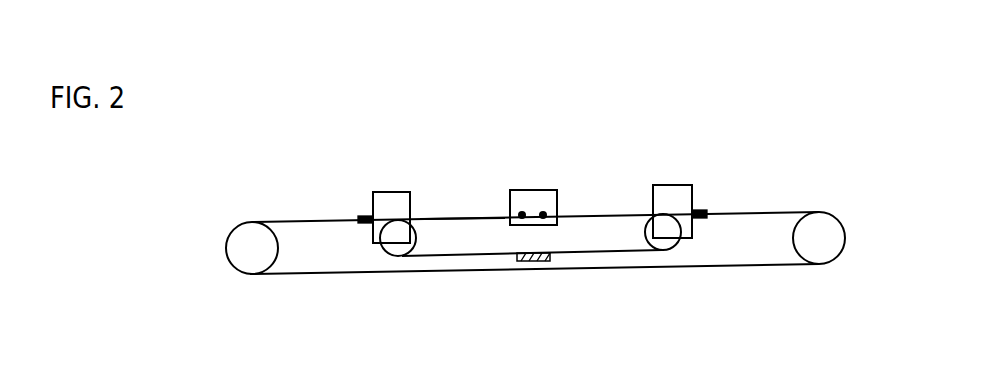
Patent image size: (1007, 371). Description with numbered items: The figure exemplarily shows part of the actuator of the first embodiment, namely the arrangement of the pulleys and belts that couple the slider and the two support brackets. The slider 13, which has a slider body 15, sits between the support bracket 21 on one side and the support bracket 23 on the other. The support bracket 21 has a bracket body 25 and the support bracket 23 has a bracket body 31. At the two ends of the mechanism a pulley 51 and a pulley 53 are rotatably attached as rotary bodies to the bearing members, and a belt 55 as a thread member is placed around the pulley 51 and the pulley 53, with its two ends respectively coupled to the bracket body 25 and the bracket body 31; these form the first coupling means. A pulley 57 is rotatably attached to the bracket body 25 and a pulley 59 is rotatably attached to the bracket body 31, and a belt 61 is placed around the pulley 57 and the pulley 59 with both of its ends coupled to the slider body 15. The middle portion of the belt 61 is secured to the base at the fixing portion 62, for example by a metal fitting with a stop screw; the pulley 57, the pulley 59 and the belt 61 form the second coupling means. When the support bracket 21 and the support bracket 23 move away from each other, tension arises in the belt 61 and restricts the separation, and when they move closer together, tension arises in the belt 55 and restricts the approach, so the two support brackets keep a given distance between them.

The slider 13 is at (540, 190).
The slider body 15 is at (525, 188).
The support bracket 21 is at (368, 199).
The support bracket 23 is at (697, 199).
The bracket body 25 is at (404, 190).
The bracket body 31 is at (663, 185).
The pulley 51 is at (235, 270).
The pulley 53 is at (833, 250).
The belt 55 is at (395, 273).
The pulley 57 is at (397, 228).
The pulley 59 is at (666, 224).
The belt 61 is at (461, 220).
The fixing portion 62 is at (533, 262).